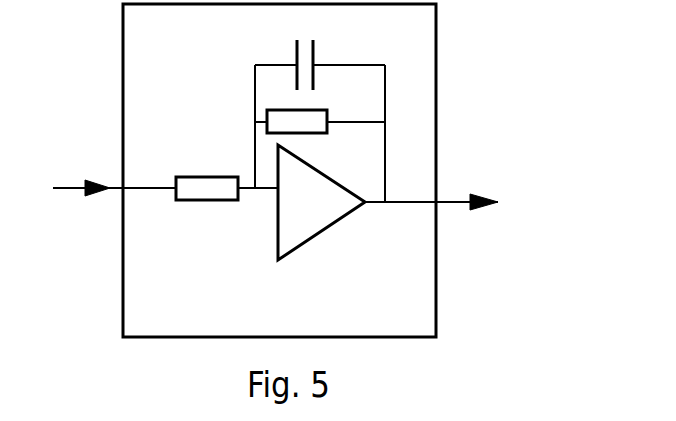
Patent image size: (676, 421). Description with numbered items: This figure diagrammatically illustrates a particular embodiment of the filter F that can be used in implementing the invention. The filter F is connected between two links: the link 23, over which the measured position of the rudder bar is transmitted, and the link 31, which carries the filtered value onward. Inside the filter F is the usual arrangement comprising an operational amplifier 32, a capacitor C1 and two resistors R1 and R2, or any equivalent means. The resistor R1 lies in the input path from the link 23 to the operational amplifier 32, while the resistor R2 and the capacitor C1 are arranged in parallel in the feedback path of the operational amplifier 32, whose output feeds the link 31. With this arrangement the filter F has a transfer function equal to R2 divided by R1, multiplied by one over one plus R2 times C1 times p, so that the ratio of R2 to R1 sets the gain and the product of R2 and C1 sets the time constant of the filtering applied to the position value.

The link 23 is at (66, 188).
The link 31 is at (456, 202).
The operational amplifier 32 is at (317, 220).
The filter F is at (436, 263).
The resistor R1 is at (227, 171).
The resistor R2 is at (320, 136).
The capacitor C1 is at (320, 58).